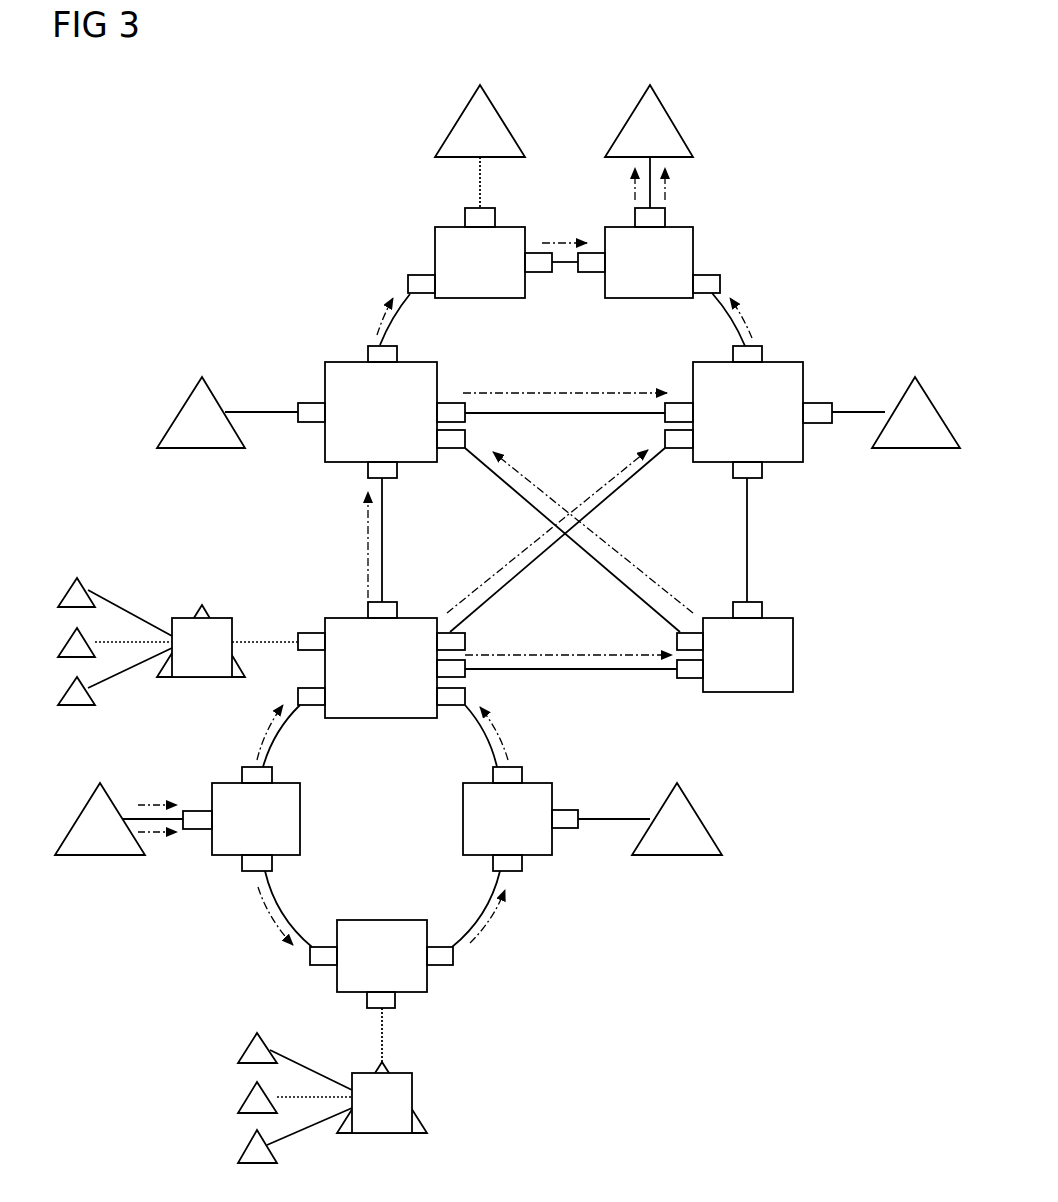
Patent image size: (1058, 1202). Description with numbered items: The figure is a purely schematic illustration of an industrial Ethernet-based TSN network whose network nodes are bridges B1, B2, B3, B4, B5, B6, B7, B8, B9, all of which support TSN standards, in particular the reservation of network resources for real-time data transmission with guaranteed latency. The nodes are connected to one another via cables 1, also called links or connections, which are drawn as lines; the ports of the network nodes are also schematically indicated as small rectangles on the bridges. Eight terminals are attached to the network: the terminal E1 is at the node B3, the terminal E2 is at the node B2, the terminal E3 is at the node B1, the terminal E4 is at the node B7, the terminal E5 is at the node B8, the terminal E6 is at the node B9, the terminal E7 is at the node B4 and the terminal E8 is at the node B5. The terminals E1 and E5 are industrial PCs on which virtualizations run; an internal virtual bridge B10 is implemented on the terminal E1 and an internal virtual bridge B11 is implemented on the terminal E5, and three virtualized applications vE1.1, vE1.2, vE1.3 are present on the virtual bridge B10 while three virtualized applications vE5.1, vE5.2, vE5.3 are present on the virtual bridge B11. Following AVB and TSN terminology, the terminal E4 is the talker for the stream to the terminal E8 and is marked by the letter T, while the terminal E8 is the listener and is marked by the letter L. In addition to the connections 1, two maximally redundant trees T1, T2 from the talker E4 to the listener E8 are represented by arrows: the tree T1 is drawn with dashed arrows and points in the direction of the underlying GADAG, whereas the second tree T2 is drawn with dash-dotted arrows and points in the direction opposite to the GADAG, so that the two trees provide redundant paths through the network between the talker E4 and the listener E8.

The cables 1 is at (402, 320).
The bridge B1 is at (343, 362).
The bridge B2 is at (778, 360).
The bridge B3 is at (382, 718).
The bridge B4 is at (435, 247).
The bridge B5 is at (693, 245).
The bridge B6 is at (793, 657).
The bridge B7 is at (227, 857).
The bridge B8 is at (427, 980).
The bridge B9 is at (535, 782).
The internal virtual bridge B10 is at (217, 618).
The internal virtual bridge B11 is at (412, 1088).
The terminal E1 is at (237, 658).
The terminal E2 is at (917, 450).
The terminal E3 is at (182, 408).
The terminal E4 is at (100, 857).
The terminal E5 is at (413, 1123).
The terminal E6 is at (680, 857).
The terminal E7 is at (458, 117).
The terminal E8 is at (670, 117).
The virtualized application vE1.1 is at (90, 587).
The virtualized application vE1.2 is at (68, 640).
The virtualized application vE1.3 is at (77, 707).
The virtualized application vE5.1 is at (242, 1047).
The virtualized application vE5.2 is at (242, 1097).
The virtualized application vE5.3 is at (242, 1147).
The tree T1 is at (382, 312).
The tree T2 is at (360, 541).